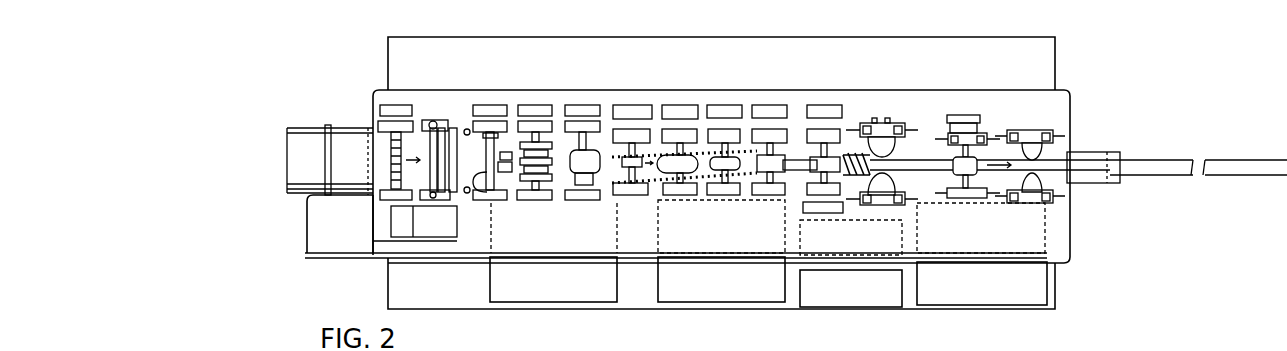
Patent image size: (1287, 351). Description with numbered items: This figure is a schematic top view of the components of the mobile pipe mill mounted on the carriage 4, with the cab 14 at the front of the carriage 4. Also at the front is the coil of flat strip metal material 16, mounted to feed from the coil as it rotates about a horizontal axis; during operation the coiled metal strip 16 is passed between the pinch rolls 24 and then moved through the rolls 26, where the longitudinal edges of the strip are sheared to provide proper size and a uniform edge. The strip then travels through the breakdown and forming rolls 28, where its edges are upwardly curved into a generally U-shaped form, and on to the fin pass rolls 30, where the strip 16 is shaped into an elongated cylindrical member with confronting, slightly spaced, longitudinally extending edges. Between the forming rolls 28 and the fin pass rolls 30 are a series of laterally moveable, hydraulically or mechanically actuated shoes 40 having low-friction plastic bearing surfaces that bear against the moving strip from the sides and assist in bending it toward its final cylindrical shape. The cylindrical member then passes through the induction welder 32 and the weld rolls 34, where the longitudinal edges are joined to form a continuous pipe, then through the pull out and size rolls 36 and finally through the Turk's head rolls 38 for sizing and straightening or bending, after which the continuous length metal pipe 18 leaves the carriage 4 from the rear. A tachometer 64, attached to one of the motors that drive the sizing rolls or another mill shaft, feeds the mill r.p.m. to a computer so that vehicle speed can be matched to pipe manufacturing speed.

The carriage 4 is at (378, 253).
The cab 14 is at (307, 258).
The coil of flat strip metal material 16 is at (318, 150).
The continuous length metal pipe 18 is at (1153, 163).
The pinch rolls 24 is at (393, 152).
The rolls 26 is at (482, 130).
The breakdown and forming rolls 28 is at (700, 158).
The fin pass rolls 30 is at (813, 162).
The induction welder 32 is at (852, 160).
The weld rolls 34 is at (913, 147).
The pull out and size rolls 36 is at (1005, 165).
The Turk's head rolls 38 is at (1040, 167).
The shoes 40 is at (716, 160).
The tachometer 64 is at (477, 176).